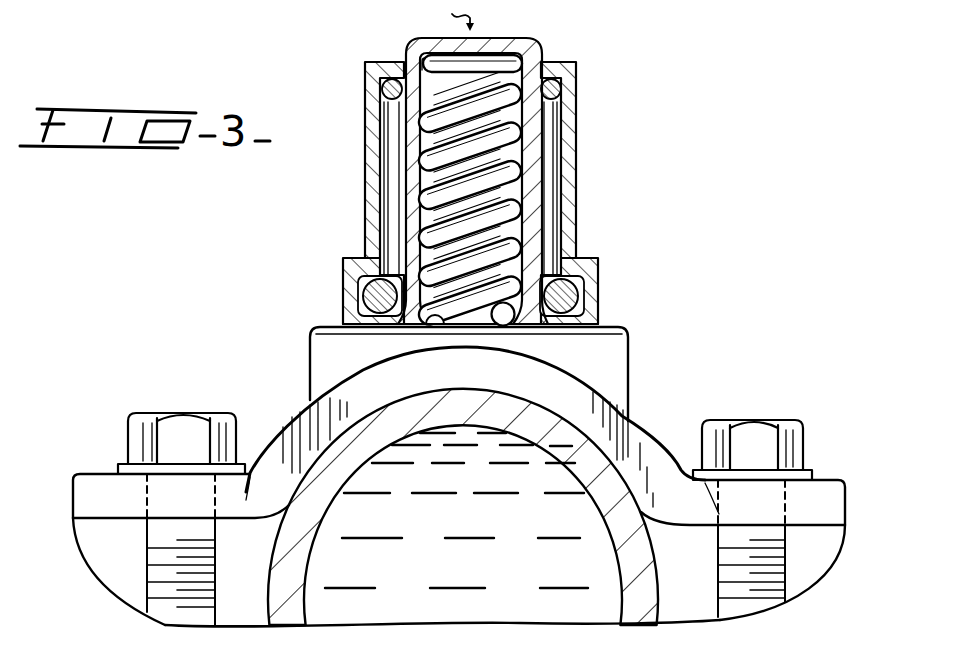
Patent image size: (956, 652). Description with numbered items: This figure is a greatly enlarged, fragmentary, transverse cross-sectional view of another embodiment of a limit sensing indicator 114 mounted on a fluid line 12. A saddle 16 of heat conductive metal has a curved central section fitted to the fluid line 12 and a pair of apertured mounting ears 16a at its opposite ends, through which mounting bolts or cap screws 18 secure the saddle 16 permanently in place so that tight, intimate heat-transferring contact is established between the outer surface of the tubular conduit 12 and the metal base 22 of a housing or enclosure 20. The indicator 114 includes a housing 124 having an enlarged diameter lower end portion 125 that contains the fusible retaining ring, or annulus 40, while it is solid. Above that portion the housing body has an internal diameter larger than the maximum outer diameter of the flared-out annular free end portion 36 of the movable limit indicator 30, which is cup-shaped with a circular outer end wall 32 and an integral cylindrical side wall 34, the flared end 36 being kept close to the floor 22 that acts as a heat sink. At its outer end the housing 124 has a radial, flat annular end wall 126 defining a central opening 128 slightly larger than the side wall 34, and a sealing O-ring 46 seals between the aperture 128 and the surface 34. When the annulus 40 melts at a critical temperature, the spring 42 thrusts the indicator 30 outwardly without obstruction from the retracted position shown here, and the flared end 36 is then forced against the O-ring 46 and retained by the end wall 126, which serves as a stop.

The fluid line 12 is at (653, 573).
The saddle 16 is at (650, 410).
The apertured mounting ears 16a is at (248, 493).
The mounting bolts or cap screws 18 is at (204, 414).
The housing or enclosure 20 is at (600, 360).
The metal base 22 is at (450, 326).
The movable limit indicator 30 is at (495, 30).
The circular outer end wall 32 is at (428, 47).
The cylindrical side wall 34 is at (532, 193).
The flared-out annular free end portion 36 is at (428, 320).
The fusible retaining ring, annulus 40 is at (575, 268).
The spring 42 is at (497, 173).
The sealing O-ring 46 is at (563, 88).
The limit sensing indicator 114 is at (493, 194).
The housing 124 is at (462, 174).
The enlarged diameter lower end portion 125 is at (343, 299).
The radial, or flat annular end wall 126 is at (541, 68).
The inner central aperture or opening 128 is at (406, 60).